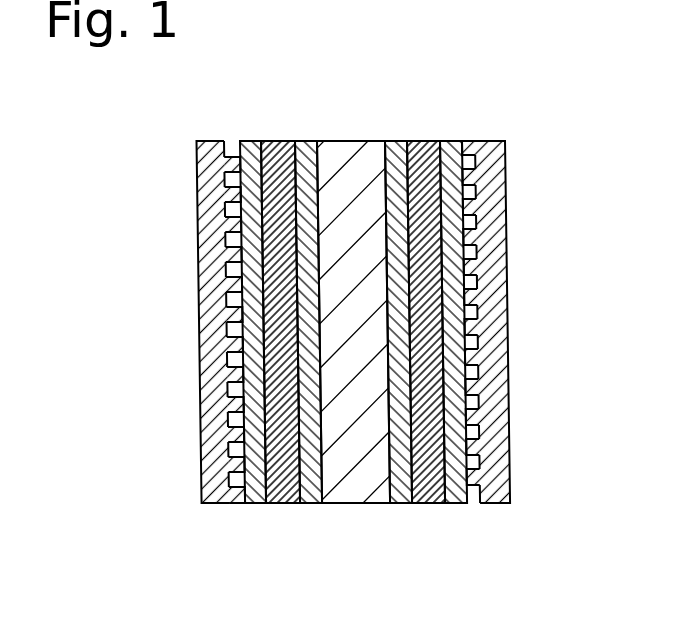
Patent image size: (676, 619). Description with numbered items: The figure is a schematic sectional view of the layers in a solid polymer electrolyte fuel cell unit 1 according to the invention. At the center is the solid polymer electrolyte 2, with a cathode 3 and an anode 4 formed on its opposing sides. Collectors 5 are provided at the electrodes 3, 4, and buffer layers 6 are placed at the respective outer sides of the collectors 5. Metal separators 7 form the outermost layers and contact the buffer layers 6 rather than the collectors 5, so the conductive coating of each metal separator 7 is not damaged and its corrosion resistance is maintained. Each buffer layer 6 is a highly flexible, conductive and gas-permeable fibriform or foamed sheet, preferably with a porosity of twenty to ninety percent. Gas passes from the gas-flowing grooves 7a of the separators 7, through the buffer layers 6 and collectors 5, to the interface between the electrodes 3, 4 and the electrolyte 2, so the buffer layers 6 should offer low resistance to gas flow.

The solid polymer electrolyte fuel cell unit 1 is at (202, 515).
The solid polymer electrolyte 2 is at (346, 150).
The cathode 3 is at (308, 150).
The anode 4 is at (392, 150).
The collector 5 is at (280, 148).
The buffer layer 6 is at (248, 150).
The metal separator 7 is at (212, 232).
The gas-flowing groove 7a is at (238, 391).